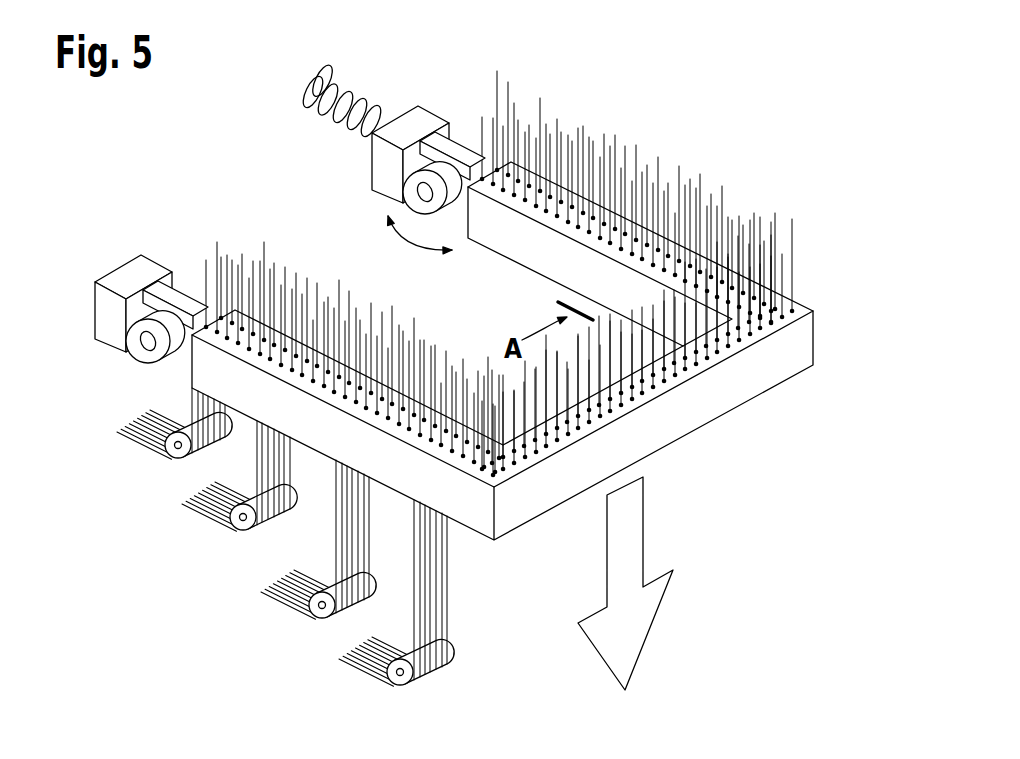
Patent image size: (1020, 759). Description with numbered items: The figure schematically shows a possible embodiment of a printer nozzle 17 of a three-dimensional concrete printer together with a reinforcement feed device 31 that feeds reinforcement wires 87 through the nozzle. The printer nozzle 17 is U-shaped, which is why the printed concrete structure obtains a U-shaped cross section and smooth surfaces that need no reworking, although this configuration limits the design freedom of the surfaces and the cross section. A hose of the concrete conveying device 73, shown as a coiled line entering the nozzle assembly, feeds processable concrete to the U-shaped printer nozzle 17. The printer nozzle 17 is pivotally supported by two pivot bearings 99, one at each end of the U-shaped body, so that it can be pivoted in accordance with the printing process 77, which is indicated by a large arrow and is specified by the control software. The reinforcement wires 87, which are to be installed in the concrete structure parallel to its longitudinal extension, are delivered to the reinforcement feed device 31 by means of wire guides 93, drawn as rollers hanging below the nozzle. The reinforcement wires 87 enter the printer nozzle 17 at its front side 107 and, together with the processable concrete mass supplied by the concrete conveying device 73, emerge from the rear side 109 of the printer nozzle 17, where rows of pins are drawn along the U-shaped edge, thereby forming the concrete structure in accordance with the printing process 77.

The printer nozzle 17 is at (787, 362).
The reinforcement feed device 31 is at (285, 537).
The concrete conveying device 73 is at (333, 121).
The printing process 77 is at (634, 533).
The reinforcement wires 87 is at (760, 243).
The wire guides 93 is at (245, 530).
The pivot bearings 99 is at (533, 127).
The front side 107 is at (535, 558).
The rear side 109 is at (663, 186).